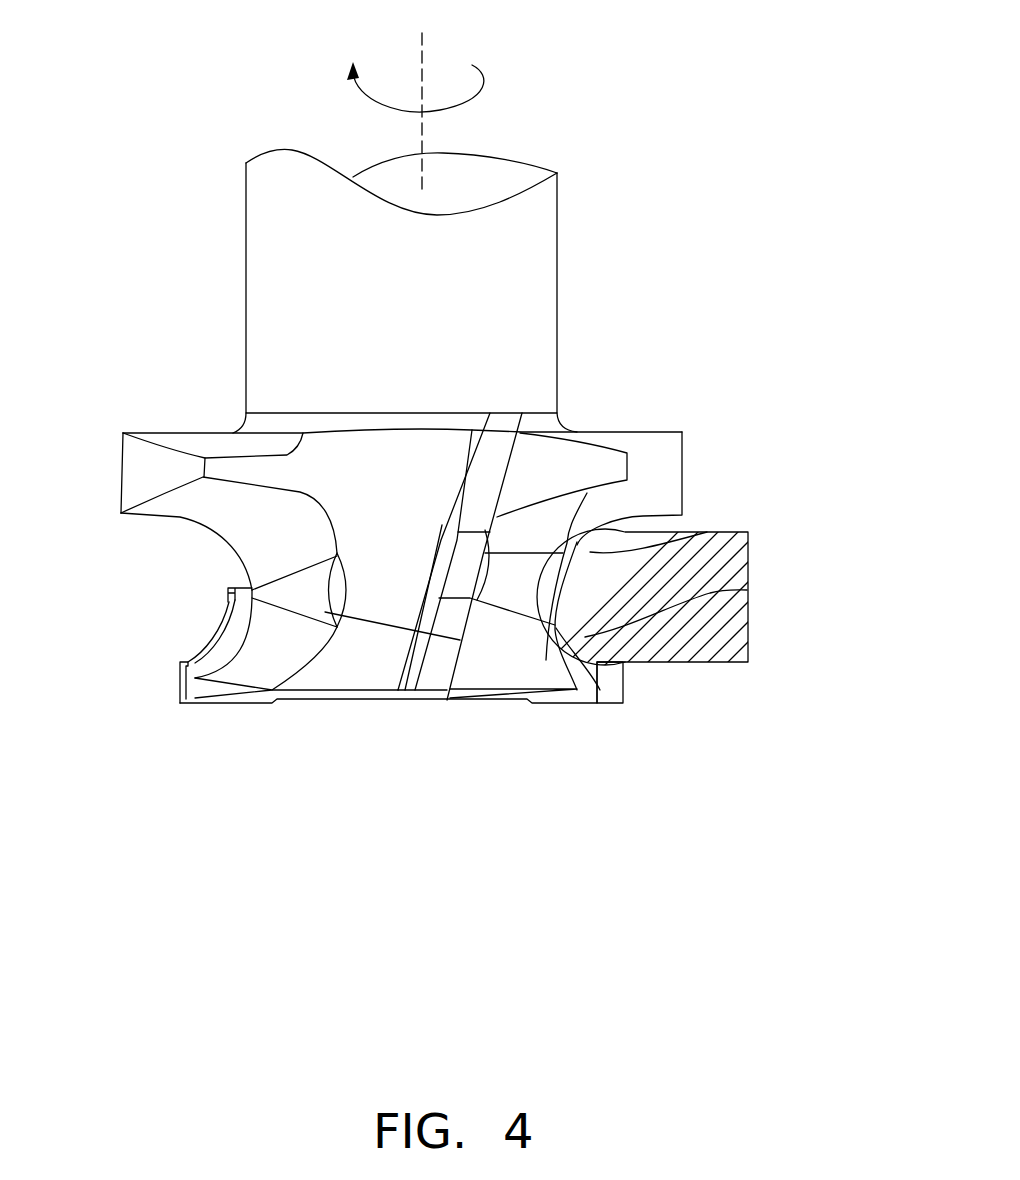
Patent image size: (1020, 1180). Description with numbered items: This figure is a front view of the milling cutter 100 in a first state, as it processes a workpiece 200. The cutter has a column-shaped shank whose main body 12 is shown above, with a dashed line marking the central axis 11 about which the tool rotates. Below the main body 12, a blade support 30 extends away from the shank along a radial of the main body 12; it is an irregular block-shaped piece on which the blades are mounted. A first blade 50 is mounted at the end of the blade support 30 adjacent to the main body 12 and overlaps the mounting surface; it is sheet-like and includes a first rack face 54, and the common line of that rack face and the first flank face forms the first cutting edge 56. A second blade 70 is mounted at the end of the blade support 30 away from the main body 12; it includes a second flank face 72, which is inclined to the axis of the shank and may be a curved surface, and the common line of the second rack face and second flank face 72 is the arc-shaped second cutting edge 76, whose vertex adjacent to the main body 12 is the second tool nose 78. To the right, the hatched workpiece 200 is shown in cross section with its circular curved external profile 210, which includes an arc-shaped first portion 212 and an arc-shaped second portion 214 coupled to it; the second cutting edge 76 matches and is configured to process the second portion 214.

The milling cutter 100 is at (568, 90).
The central axis 11 is at (415, 107).
The main body 12 is at (530, 248).
The blade support 30 is at (137, 478).
The first blade 50 is at (498, 437).
The first rack face 54 is at (462, 583).
The first cutting edge 56 is at (442, 585).
The second blade 70 is at (582, 727).
The second flank face 72 is at (613, 683).
The second cutting edge 76 is at (600, 690).
The second tool nose 78 is at (546, 660).
The workpiece 200 is at (720, 640).
The external profile 210 is at (828, 492).
The first portion 212 is at (707, 532).
The second portion 214 is at (747, 590).